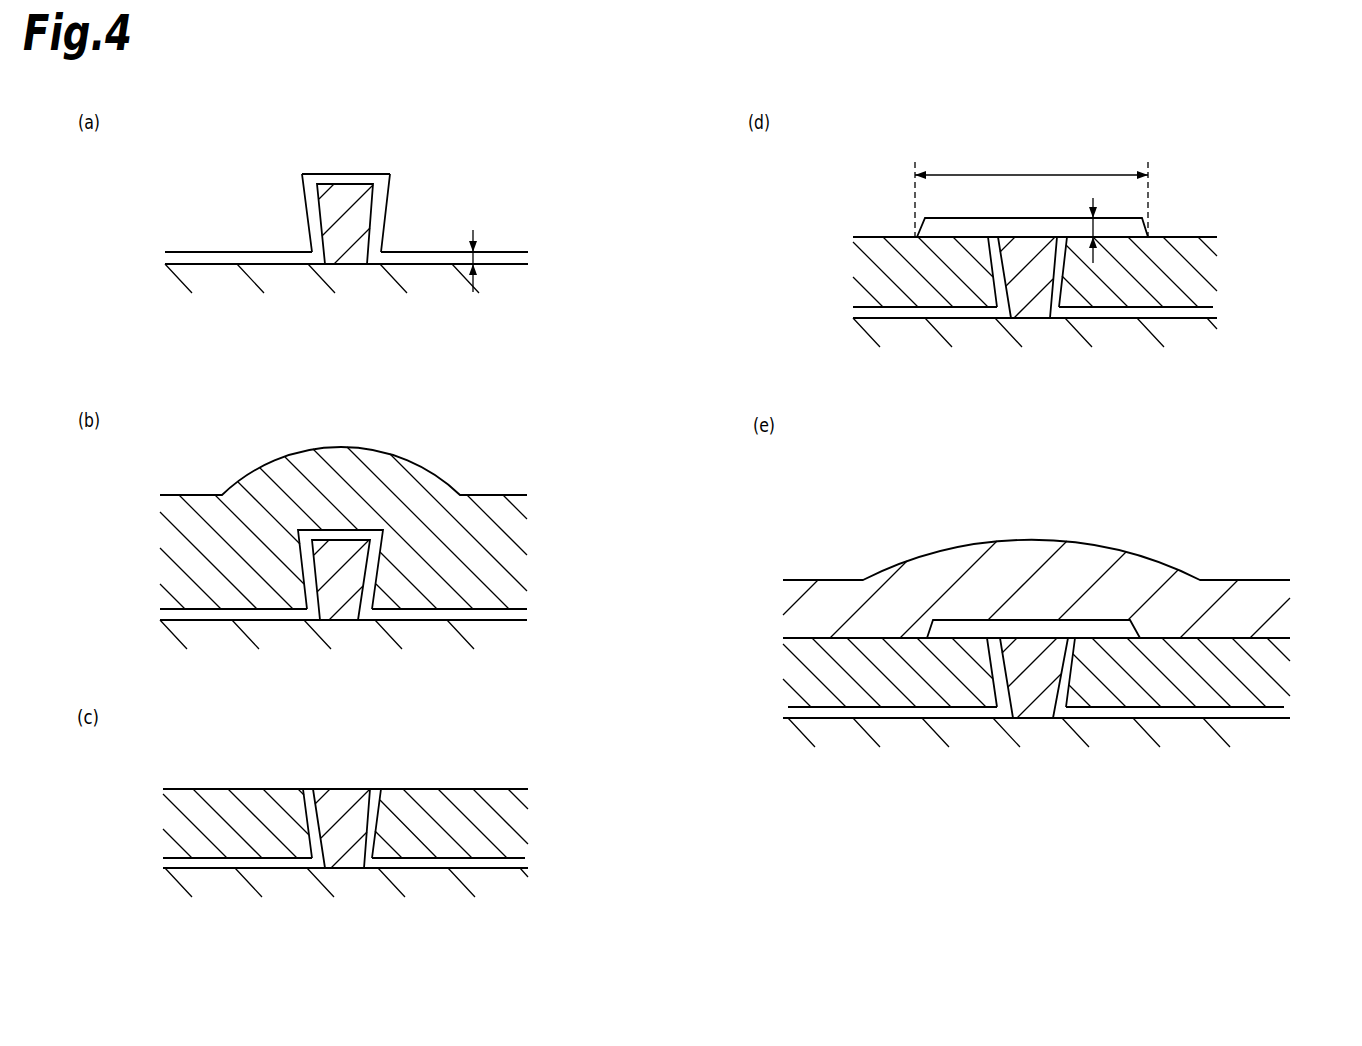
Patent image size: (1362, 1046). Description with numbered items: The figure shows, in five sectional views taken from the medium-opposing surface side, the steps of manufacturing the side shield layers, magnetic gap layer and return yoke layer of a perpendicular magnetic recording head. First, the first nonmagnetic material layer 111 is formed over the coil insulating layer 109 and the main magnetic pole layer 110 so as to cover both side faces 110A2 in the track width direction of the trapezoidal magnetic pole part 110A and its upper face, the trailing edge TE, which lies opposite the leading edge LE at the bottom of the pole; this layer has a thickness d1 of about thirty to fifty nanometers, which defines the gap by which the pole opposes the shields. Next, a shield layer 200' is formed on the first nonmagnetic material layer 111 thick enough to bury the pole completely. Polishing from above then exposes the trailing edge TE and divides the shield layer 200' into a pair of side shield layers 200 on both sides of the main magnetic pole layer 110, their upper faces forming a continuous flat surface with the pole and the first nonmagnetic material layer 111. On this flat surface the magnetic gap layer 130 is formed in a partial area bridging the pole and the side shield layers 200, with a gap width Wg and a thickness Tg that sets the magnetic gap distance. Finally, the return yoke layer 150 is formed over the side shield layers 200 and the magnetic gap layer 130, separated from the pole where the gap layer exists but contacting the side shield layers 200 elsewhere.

The coil insulating layer 109 is at (508, 278).
The first nonmagnetic material layer 111 is at (508, 260).
The main magnetic pole layer 110 is at (685, 486).
The magnetic pole part 110A is at (343, 222).
The side faces 110A2 is at (322, 232).
The trailing edge TE is at (357, 174).
The leading edge LE is at (345, 265).
The thickness d1 is at (478, 255).
The shield layer 200' is at (343, 517).
The side shield layers 200 is at (717, 547).
The magnetic gap layer 130 is at (1068, 228).
The return yoke layer 150 is at (908, 598).
The gap width Wg is at (1031, 199).
The thickness Tg is at (1095, 226).